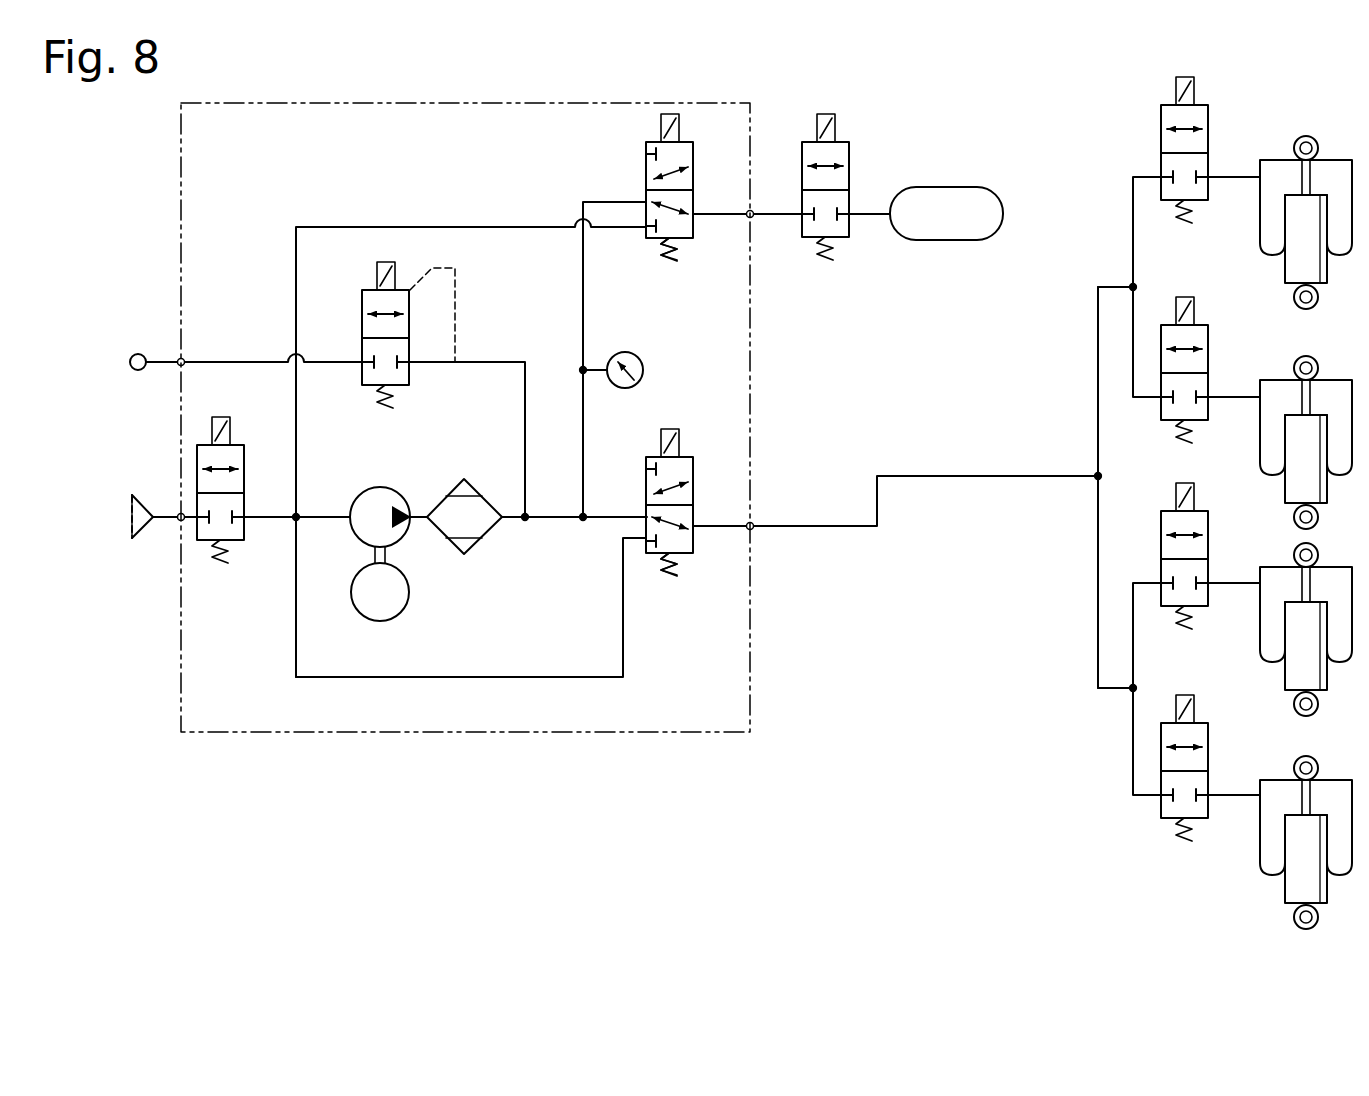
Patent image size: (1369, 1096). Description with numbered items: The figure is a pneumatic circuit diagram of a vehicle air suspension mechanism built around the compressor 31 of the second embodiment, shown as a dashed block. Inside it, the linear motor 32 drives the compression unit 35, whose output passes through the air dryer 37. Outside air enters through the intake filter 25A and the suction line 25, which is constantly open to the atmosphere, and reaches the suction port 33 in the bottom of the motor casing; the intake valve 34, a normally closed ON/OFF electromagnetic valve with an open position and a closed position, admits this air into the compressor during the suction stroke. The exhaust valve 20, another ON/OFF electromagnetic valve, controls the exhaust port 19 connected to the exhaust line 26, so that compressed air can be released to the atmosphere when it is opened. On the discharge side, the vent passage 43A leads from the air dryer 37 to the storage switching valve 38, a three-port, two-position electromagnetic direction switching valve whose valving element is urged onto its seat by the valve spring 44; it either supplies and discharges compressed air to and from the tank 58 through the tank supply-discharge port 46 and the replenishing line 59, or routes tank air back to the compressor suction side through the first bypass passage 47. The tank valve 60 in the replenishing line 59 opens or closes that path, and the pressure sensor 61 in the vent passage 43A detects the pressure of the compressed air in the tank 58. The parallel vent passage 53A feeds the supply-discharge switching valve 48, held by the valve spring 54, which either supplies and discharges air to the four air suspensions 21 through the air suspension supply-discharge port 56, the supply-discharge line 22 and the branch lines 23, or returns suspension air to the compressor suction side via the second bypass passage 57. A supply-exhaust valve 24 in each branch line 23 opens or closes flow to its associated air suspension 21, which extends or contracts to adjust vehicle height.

The exhaust port 19 is at (178, 366).
The exhaust valve 20 is at (372, 290).
The air suspension 21 is at (1342, 160).
The supply-discharge line 22 is at (915, 475).
The branch line 23 is at (1132, 212).
The supply-exhaust valve 24 is at (1207, 105).
The suction line 25 is at (158, 522).
The intake filter 25A is at (138, 530).
The exhaust line 26 is at (176, 360).
The compressor 31 is at (432, 732).
The linear motor 32 is at (382, 622).
The suction port 33 is at (180, 513).
The intake valve 34 is at (228, 440).
The compression unit 35 is at (383, 487).
The air dryer 37 is at (470, 553).
The storage switching valve 38 is at (652, 144).
The vent passage 43A is at (585, 328).
The valve spring 44 is at (662, 258).
The tank supply-discharge port 46 is at (752, 218).
The first bypass passage 47 is at (492, 225).
The supply-discharge switching valve 48 is at (655, 457).
The vent passage 53A is at (601, 520).
The valve spring 54 is at (670, 576).
The air suspension supply-discharge port 56 is at (753, 530).
The second bypass passage 57 is at (626, 675).
The tank 58 is at (955, 187).
The replenishing line 59 is at (779, 212).
The tank valve 60 is at (840, 142).
The pressure sensor 61 is at (643, 371).